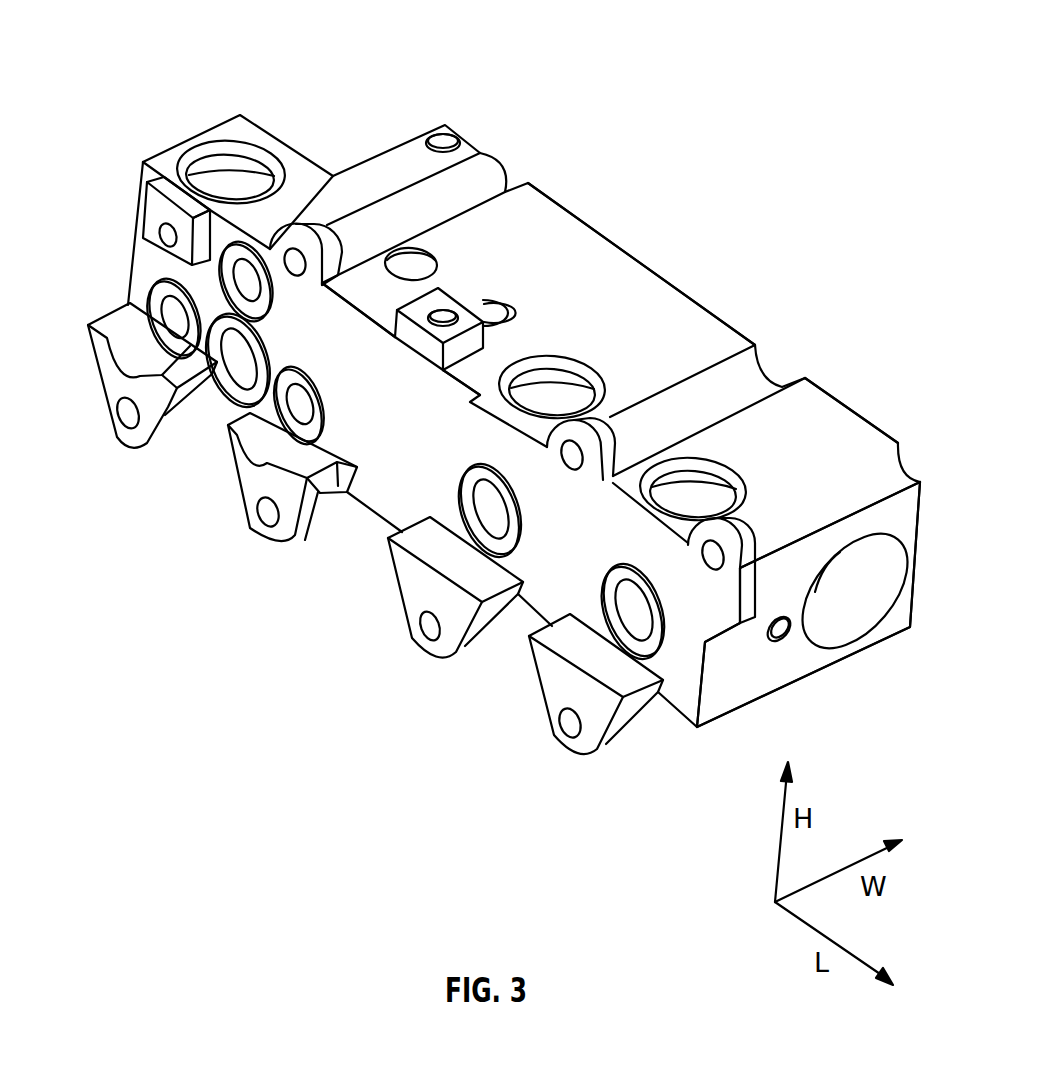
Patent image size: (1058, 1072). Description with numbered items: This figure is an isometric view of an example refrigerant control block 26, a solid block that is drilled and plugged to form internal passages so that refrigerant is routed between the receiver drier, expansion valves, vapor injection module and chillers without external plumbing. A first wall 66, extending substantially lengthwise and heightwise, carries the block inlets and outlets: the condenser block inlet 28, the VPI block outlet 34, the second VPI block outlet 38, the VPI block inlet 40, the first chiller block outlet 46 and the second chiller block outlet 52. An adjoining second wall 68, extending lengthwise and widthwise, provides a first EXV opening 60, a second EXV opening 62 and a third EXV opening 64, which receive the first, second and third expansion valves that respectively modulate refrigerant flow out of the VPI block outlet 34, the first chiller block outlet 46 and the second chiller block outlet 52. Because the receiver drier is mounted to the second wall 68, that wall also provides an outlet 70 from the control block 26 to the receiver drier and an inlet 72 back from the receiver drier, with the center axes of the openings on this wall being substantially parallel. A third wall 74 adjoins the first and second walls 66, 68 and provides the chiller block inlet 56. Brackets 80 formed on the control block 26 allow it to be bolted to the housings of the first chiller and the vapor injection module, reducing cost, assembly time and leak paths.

The refrigerant control block 26 is at (146, 108).
The condenser block inlet 28 is at (303, 403).
The VPI block outlet 34 is at (177, 320).
The second VPI block outlet 38 is at (250, 272).
The VPI block inlet 40 is at (240, 362).
The first chiller block outlet 46 is at (502, 515).
The second chiller block outlet 52 is at (633, 612).
The chiller block inlet 56 is at (860, 617).
The first EXV opening 60 is at (228, 187).
The second EXV opening 62 is at (550, 400).
The third EXV opening 64 is at (683, 497).
The first wall 66 is at (417, 443).
The second wall 68 is at (565, 243).
The outlet 70 is at (487, 318).
The inlet 72 is at (412, 265).
The third wall 74 is at (777, 676).
The brackets 80 is at (306, 218).